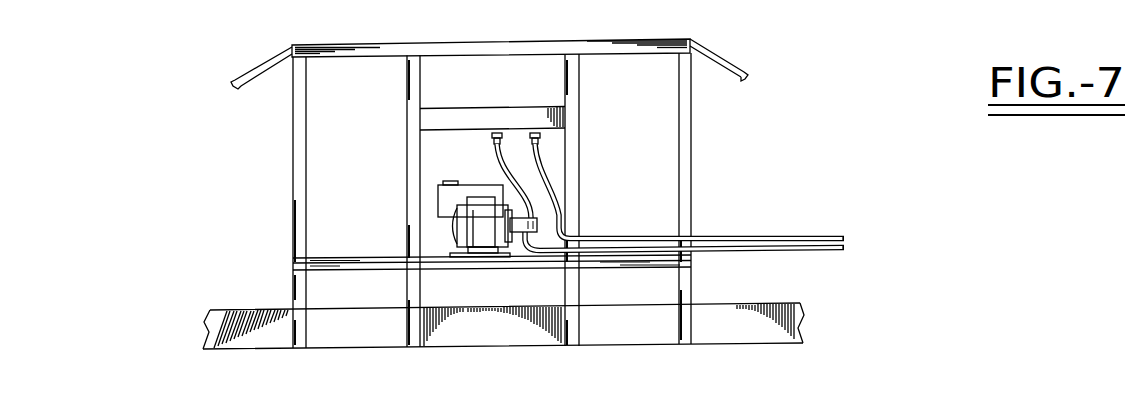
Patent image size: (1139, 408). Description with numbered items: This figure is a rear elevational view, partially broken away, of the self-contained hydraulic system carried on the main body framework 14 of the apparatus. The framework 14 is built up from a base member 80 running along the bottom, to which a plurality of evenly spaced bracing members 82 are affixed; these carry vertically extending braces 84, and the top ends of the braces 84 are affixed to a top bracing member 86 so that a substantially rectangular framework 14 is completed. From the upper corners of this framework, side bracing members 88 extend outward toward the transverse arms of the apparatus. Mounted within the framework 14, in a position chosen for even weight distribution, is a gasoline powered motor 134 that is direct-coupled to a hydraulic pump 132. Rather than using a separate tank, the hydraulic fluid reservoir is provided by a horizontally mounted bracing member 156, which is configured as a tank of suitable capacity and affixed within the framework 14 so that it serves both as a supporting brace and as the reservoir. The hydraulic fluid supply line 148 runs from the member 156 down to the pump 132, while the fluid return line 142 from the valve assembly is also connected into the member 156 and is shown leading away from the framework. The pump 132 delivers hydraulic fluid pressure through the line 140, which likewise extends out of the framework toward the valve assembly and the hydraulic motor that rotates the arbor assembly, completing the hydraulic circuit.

The main body framework 14 is at (274, 169).
The base member 80 is at (203, 325).
The bracing member 82 is at (293, 270).
The vertically extending brace 84 is at (405, 128).
The top bracing member 86 is at (447, 44).
The side bracing member 88 is at (250, 68).
The hydraulic pump 132 is at (516, 238).
The motor 134 is at (463, 229).
The line 140 is at (844, 249).
The fluid return line 142 is at (545, 163).
The hydraulic fluid supply line 148 is at (493, 149).
The horizontally mounted bracing member 156 is at (505, 107).